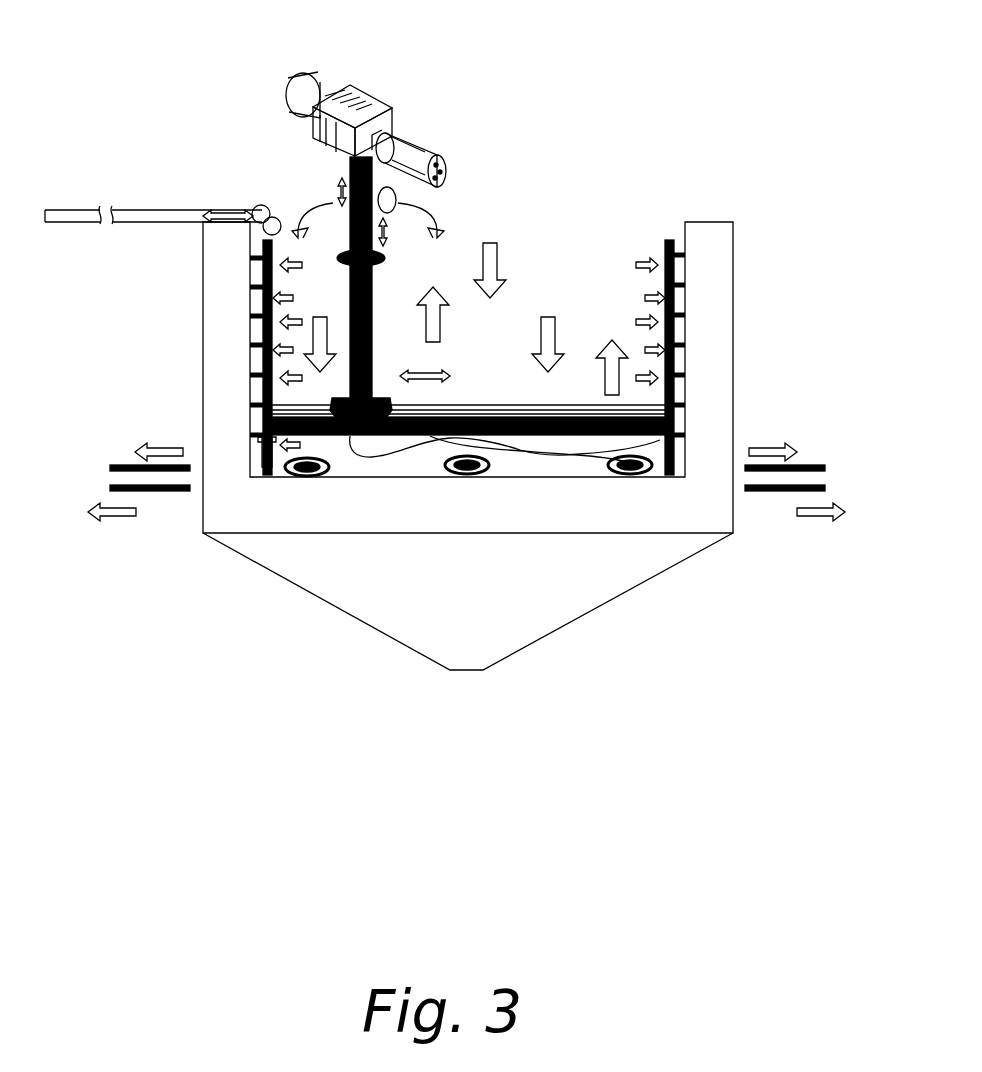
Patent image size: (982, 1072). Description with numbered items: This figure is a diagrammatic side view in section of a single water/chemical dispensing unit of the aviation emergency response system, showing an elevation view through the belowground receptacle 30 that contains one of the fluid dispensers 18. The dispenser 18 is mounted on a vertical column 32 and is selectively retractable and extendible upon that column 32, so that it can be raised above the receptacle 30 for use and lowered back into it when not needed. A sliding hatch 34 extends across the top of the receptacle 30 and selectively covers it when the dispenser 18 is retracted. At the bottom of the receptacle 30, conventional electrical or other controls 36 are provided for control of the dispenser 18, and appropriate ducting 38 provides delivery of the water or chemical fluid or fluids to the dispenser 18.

The fluid dispenser 18 is at (372, 100).
The belowground receptacle 30 is at (562, 225).
The vertical column 32 is at (373, 300).
The sliding hatch 34 is at (140, 212).
The controls 36 is at (308, 476).
The ducting 38 is at (498, 400).